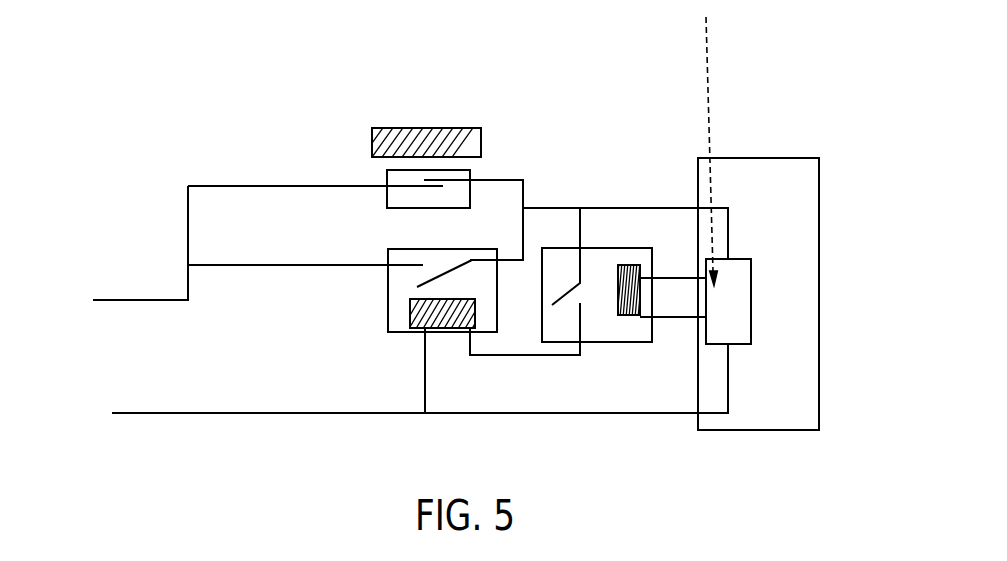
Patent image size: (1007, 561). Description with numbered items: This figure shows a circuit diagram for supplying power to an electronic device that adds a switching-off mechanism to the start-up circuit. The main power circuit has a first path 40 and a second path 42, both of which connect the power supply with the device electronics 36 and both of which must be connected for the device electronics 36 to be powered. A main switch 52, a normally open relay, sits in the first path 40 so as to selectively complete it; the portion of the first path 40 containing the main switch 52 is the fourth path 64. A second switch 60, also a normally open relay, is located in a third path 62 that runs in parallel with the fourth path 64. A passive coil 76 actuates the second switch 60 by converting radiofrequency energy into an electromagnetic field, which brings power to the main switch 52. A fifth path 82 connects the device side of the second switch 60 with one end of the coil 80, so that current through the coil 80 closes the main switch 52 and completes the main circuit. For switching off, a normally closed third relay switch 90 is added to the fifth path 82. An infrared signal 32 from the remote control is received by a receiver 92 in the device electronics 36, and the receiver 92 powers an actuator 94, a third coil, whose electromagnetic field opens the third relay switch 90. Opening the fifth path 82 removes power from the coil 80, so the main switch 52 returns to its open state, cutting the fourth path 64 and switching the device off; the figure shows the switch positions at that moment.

The signal 32 is at (705, 25).
The device electronics 36 is at (779, 158).
The first path 40 is at (183, 298).
The second path 42 is at (203, 413).
The main switch 52 is at (432, 262).
The second switch 60 is at (388, 172).
The third path 62 is at (213, 186).
The fourth path 64 is at (350, 266).
The coil 76 is at (383, 128).
The coil 80 is at (415, 330).
The fifth path 82 is at (527, 357).
The third relay switch 90 is at (580, 298).
The receiver 92 is at (740, 259).
The actuator 94 is at (630, 265).